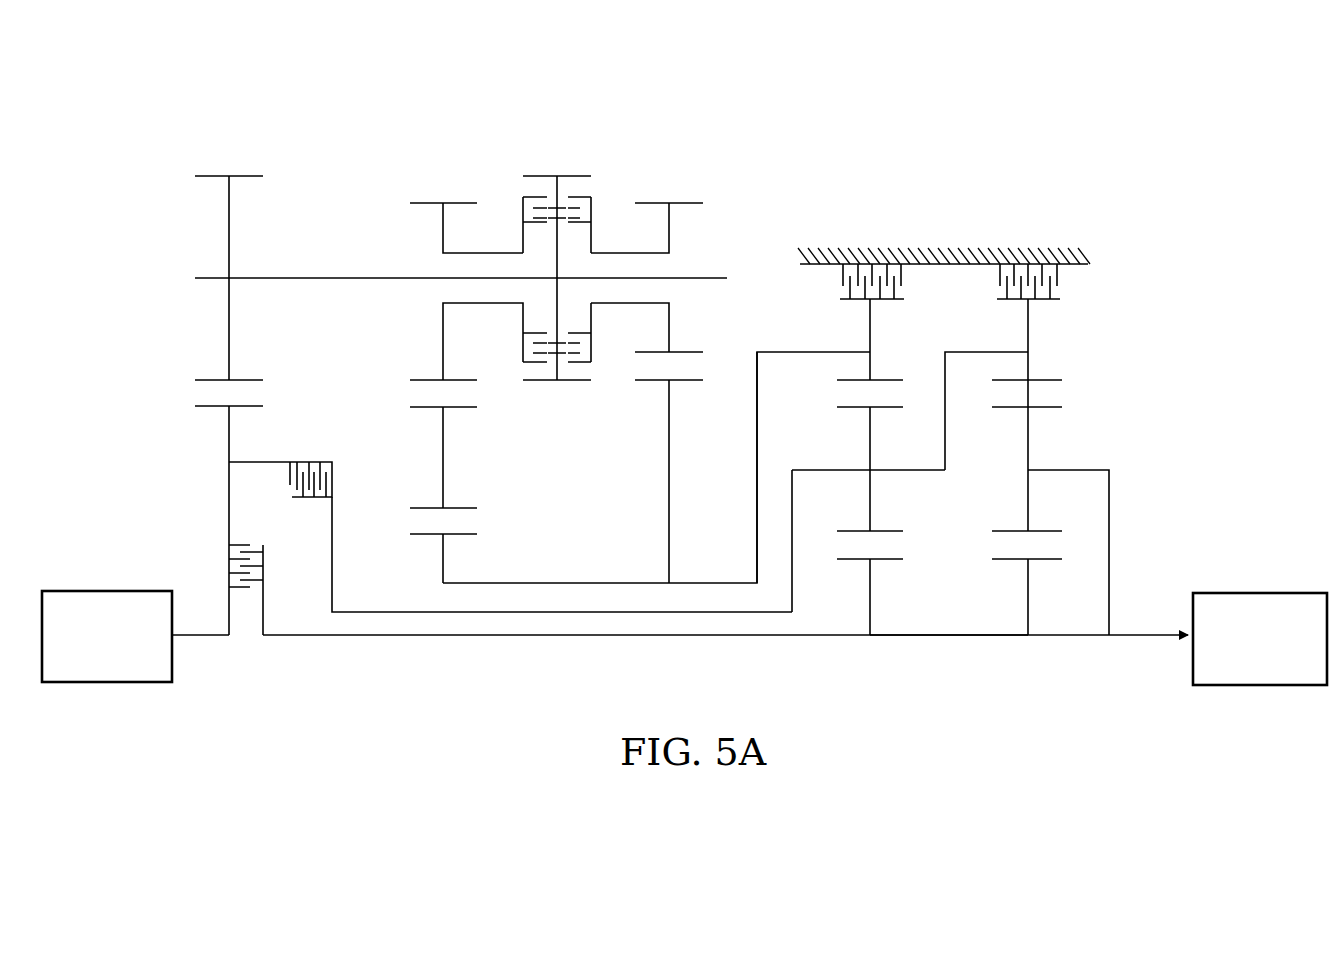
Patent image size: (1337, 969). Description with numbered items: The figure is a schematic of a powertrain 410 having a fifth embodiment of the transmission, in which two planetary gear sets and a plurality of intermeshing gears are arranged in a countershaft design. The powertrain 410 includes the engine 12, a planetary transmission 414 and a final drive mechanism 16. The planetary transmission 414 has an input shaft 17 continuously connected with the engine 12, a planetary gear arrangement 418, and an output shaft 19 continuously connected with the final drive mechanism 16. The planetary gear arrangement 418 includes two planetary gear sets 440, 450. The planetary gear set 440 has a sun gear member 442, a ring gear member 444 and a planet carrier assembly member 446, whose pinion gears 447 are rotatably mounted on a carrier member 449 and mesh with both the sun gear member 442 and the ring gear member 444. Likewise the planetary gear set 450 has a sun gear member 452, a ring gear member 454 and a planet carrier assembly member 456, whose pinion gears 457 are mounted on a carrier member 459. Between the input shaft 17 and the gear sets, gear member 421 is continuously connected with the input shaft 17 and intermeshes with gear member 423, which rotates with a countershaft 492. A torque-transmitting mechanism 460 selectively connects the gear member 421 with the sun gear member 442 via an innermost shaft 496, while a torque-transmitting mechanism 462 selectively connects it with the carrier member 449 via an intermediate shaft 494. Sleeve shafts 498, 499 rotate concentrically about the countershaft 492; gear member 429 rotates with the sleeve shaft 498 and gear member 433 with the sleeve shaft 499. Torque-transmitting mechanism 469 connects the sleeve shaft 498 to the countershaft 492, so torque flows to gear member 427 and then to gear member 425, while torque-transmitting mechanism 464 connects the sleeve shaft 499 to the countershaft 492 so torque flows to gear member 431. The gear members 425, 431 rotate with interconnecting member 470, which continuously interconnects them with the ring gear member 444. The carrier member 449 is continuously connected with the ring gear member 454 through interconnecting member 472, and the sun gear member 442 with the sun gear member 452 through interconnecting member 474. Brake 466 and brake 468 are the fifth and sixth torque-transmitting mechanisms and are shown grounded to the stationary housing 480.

The engine 12 is at (113, 572).
The final drive mechanism 16 is at (1255, 572).
The input shaft 17 is at (197, 635).
The output shaft 19 is at (1150, 635).
The powertrain 410 is at (160, 405).
The planetary transmission 414 is at (477, 223).
The planetary gear arrangement 418 is at (939, 375).
The gear member 421 is at (229, 436).
The gear member 423 is at (229, 345).
The gear member 425 is at (443, 553).
The gear member 427 is at (443, 458).
The gear member 429 is at (443, 345).
The gear member 431 is at (669, 424).
The gear member 433 is at (669, 324).
The planetary gear set 440 is at (882, 568).
The sun gear member 442 is at (896, 562).
The ring gear member 444 is at (890, 378).
The planet carrier assembly member 446 is at (830, 447).
The pinion gears 447 is at (870, 508).
The carrier member 449 is at (903, 468).
The planetary gear set 450 is at (1040, 568).
The sun gear member 452 is at (1052, 562).
The ring gear member 454 is at (1047, 378).
The planet carrier assembly member 456 is at (1010, 458).
The pinion gears 457 is at (1028, 508).
The carrier member 459 is at (1080, 468).
The torque-transmitting mechanism 460 is at (248, 530).
The torque-transmitting mechanism 462 is at (350, 478).
The torque-transmitting mechanism 464 is at (605, 195).
The brake 466 is at (828, 282).
The brake 468 is at (1068, 282).
The torque-transmitting mechanism 469 is at (508, 195).
The interconnecting member 470 is at (617, 583).
The interconnecting member 472 is at (968, 350).
The interconnecting member 474 is at (990, 635).
The transmission housing (ground) 480 is at (827, 250).
The countershaft 492 is at (322, 278).
The intermediate shaft 494 is at (389, 612).
The innermost shaft 496 is at (430, 635).
The sleeve shaft 498 is at (497, 243).
The sleeve shaft 499 is at (613, 243).